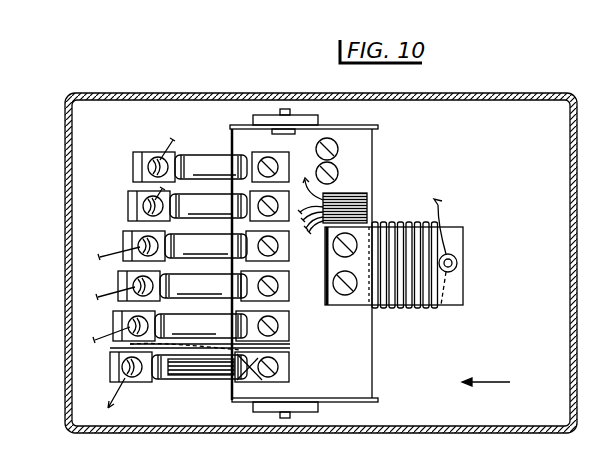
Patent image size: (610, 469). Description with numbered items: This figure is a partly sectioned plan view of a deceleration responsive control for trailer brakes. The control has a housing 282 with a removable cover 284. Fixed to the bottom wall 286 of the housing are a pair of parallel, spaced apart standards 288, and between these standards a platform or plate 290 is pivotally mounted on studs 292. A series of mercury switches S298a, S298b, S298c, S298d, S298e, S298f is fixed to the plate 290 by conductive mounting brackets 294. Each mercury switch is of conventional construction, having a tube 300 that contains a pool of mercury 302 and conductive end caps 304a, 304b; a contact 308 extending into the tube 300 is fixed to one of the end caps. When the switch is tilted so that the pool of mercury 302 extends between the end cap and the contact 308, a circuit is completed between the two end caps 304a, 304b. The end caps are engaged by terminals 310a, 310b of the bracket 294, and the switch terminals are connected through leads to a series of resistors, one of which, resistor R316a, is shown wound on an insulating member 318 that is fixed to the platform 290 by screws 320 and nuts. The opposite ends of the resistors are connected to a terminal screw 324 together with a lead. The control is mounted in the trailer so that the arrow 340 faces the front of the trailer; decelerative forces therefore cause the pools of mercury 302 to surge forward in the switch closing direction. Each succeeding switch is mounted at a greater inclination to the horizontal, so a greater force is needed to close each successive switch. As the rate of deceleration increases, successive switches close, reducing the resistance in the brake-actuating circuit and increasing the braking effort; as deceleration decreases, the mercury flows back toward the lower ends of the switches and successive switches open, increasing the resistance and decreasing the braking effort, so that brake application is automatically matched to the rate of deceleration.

The housing 282 is at (65, 162).
The removable cover 284 is at (176, 466).
The bottom wall 286 is at (155, 406).
The standards 288 is at (316, 116).
The platform or plate 290 is at (355, 150).
The studs 292 is at (284, 108).
The conductive mounting brackets 294 is at (115, 312).
The mercury switch S298a is at (188, 372).
The mercury switch S298b is at (191, 327).
The mercury switch S298c is at (192, 286).
The mercury switch S298d is at (193, 246).
The mercury switch S298e is at (208, 204).
The mercury switch S298f is at (211, 160).
The tube 300 is at (178, 378).
The pool of mercury 302 is at (287, 336).
The conductive end cap 304a is at (282, 381).
The conductive end cap 304b is at (112, 356).
The contact 308 is at (268, 380).
The terminal 310a is at (283, 360).
The terminal 310b is at (113, 370).
The resistor R316a is at (420, 306).
The insulating members 318 is at (463, 297).
The screws 320 is at (329, 262).
The terminal screw 324 is at (458, 264).
The arrow 340 is at (483, 384).